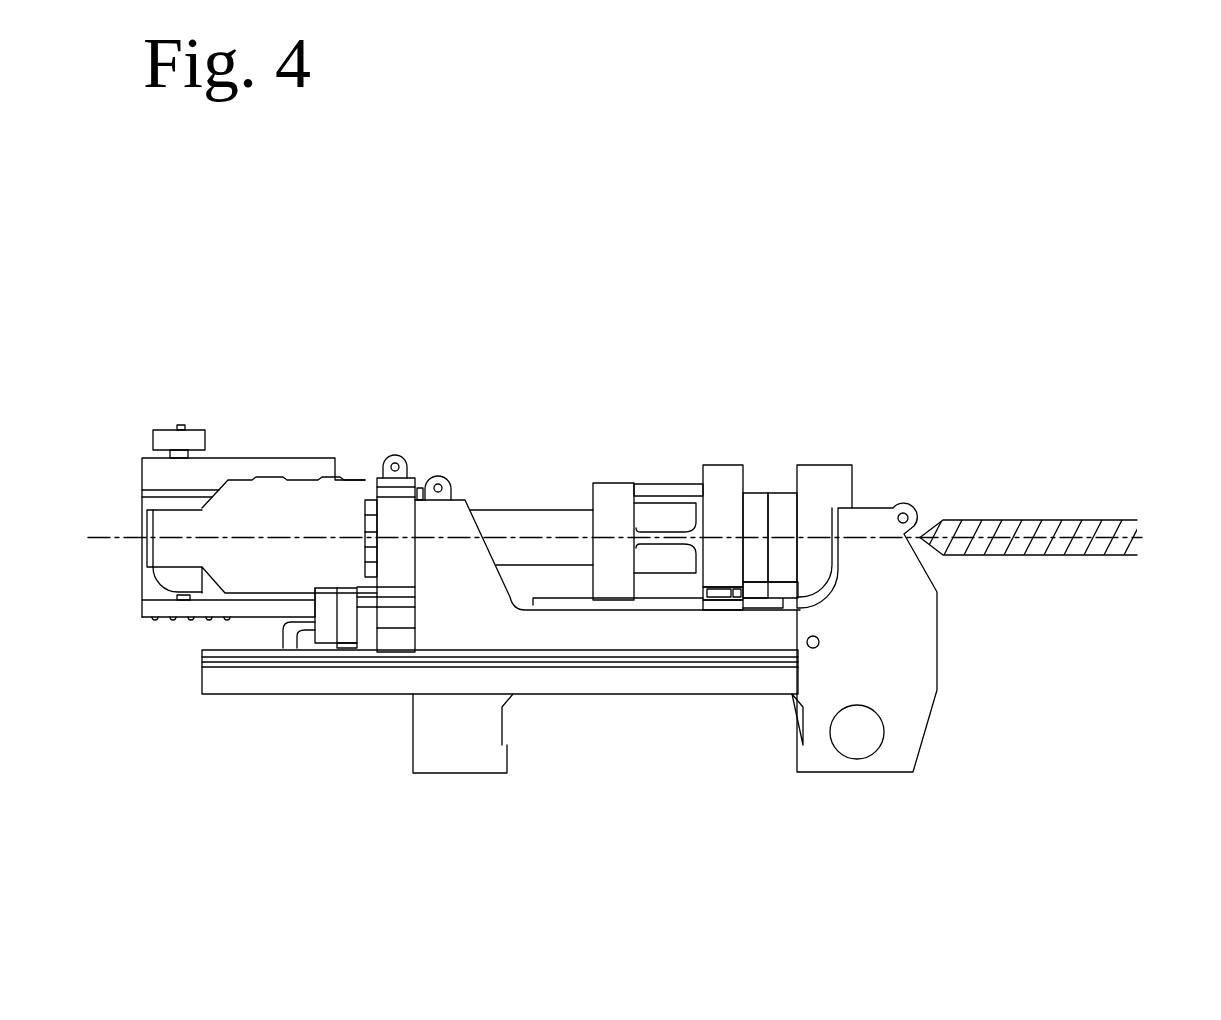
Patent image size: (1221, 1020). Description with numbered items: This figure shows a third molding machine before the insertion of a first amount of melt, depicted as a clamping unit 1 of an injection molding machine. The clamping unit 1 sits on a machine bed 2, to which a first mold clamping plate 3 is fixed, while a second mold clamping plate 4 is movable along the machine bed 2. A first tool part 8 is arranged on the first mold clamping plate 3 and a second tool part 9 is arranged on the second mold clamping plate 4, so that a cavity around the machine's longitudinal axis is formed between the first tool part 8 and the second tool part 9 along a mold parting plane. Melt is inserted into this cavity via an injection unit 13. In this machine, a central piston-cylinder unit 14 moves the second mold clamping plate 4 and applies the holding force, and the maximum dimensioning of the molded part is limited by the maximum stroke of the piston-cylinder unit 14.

The clamping unit 1 is at (945, 316).
The machine bed 2 is at (907, 693).
The first mold clamping plate 3 is at (815, 477).
The second mold clamping plate 4 is at (717, 477).
The first tool part 8 is at (785, 508).
The second tool part 9 is at (755, 510).
The injection unit 13 is at (1017, 533).
The central piston-cylinder unit 14 is at (268, 565).